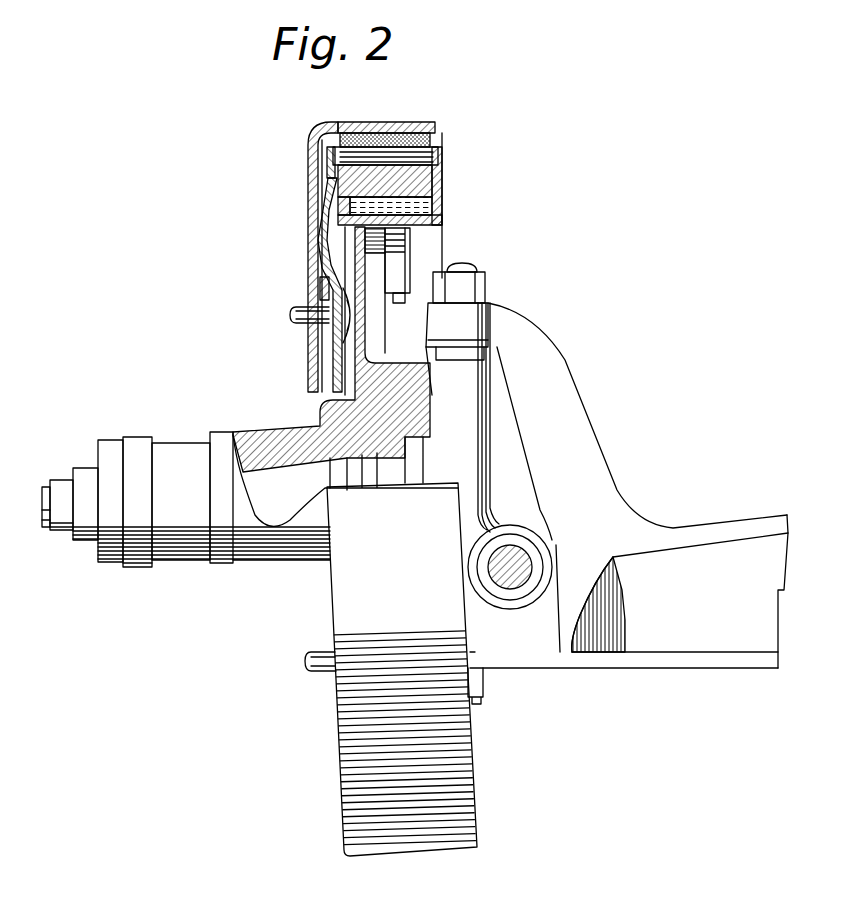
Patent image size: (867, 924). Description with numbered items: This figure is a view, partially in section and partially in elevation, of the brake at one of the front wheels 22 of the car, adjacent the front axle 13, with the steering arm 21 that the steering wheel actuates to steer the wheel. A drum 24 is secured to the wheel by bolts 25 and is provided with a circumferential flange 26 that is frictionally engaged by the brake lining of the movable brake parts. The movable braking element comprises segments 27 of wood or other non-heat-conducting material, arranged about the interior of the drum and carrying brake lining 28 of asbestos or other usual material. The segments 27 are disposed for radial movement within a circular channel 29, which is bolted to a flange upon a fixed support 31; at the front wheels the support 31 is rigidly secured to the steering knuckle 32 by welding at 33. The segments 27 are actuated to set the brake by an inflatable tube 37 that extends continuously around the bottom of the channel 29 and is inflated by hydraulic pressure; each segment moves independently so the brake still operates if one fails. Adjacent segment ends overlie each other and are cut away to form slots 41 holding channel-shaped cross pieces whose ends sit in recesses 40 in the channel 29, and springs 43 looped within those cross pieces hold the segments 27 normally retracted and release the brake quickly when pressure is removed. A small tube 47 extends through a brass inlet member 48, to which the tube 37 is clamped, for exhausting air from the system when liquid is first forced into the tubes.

The front axle 13 is at (731, 532).
The steering arm 21 is at (512, 560).
The front wheel 22 is at (444, 150).
The drum 24 is at (307, 143).
The bolt 25 is at (307, 324).
The circumferential flange 26 is at (433, 125).
The segment 27 is at (444, 167).
The brake lining 28 is at (395, 140).
The circular channel 29 is at (443, 205).
The fixed support 31 is at (381, 368).
The steering knuckle 32 is at (490, 407).
The welding 33 is at (432, 393).
The inflatable tube 37 is at (338, 214).
The recess 40 is at (337, 172).
The slot 41 is at (363, 155).
The spring 43 is at (306, 203).
The small tube 47 is at (444, 226).
The inlet member 48 is at (402, 292).